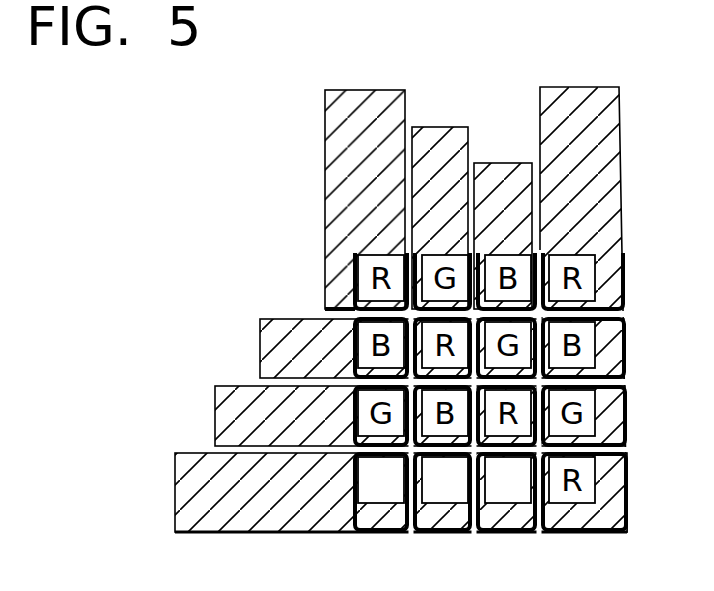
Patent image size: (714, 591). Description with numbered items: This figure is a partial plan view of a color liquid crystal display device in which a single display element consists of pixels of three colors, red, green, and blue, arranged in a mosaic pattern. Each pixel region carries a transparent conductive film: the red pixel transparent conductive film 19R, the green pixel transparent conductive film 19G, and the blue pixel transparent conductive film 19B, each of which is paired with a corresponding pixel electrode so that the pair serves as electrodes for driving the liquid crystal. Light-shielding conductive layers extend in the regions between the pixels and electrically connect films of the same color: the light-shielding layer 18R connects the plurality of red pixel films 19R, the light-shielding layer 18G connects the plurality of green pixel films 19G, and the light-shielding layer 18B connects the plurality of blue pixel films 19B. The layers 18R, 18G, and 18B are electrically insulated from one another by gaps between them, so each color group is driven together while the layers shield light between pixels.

The light-shielding conductive layer 18R is at (272, 518).
The transparent conductive film 19R is at (387, 504).
The light-shielding conductive layer 18G is at (442, 518).
The transparent conductive film 19G is at (465, 504).
The transparent conductive film 19B is at (530, 504).
The light-shielding conductive layer 18B is at (537, 535).